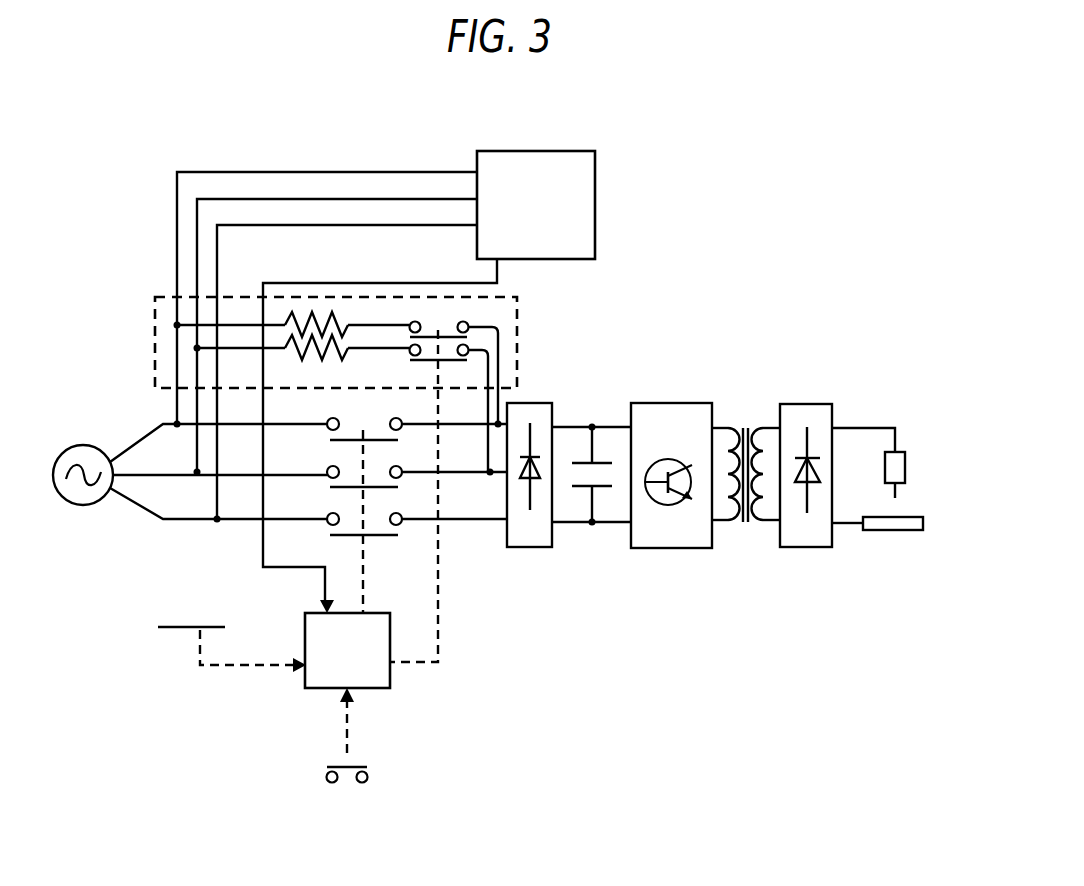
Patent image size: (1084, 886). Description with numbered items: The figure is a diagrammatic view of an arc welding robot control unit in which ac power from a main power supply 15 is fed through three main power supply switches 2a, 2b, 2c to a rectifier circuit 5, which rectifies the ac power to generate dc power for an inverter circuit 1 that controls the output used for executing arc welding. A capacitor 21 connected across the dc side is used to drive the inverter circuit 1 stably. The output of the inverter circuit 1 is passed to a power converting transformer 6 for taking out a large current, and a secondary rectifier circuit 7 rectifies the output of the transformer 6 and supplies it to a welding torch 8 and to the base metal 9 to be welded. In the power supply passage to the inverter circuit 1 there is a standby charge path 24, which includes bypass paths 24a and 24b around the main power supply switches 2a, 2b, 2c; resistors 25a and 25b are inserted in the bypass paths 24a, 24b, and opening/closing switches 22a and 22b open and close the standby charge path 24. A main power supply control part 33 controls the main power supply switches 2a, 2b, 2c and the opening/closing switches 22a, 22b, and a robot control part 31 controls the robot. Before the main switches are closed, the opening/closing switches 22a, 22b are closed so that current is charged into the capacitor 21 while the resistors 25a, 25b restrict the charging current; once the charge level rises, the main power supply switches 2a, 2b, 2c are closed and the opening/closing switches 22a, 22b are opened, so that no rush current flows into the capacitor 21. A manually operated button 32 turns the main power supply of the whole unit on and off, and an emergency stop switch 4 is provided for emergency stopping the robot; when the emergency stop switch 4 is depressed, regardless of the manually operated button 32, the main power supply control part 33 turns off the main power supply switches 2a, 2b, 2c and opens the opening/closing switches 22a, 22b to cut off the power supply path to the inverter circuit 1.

The inverter circuit 1 is at (682, 418).
The main power supply switch 2a is at (395, 537).
The main power supply switch 2b is at (330, 487).
The main power supply switch 2c is at (397, 440).
The emergency stop switch 4 is at (177, 640).
The rectifier circuit 5 is at (523, 398).
The power converting transformer 6 is at (755, 537).
The secondary rectifier circuit 7 is at (802, 415).
The welding torch 8 is at (898, 460).
The base metal 9 is at (917, 523).
The main power supply 15 is at (80, 443).
The capacitor 21 is at (598, 457).
The opening/closing switch 22a is at (469, 325).
The opening/closing switch 22b is at (455, 364).
The standby charge path 24 is at (172, 295).
The bypass path 24a is at (368, 325).
The bypass path 24b is at (383, 355).
The resistor 25a is at (330, 320).
The resistor 25b is at (298, 352).
The robot control part 31 is at (580, 212).
The manually operated button 32 is at (367, 792).
The main power supply control part 33 is at (335, 640).